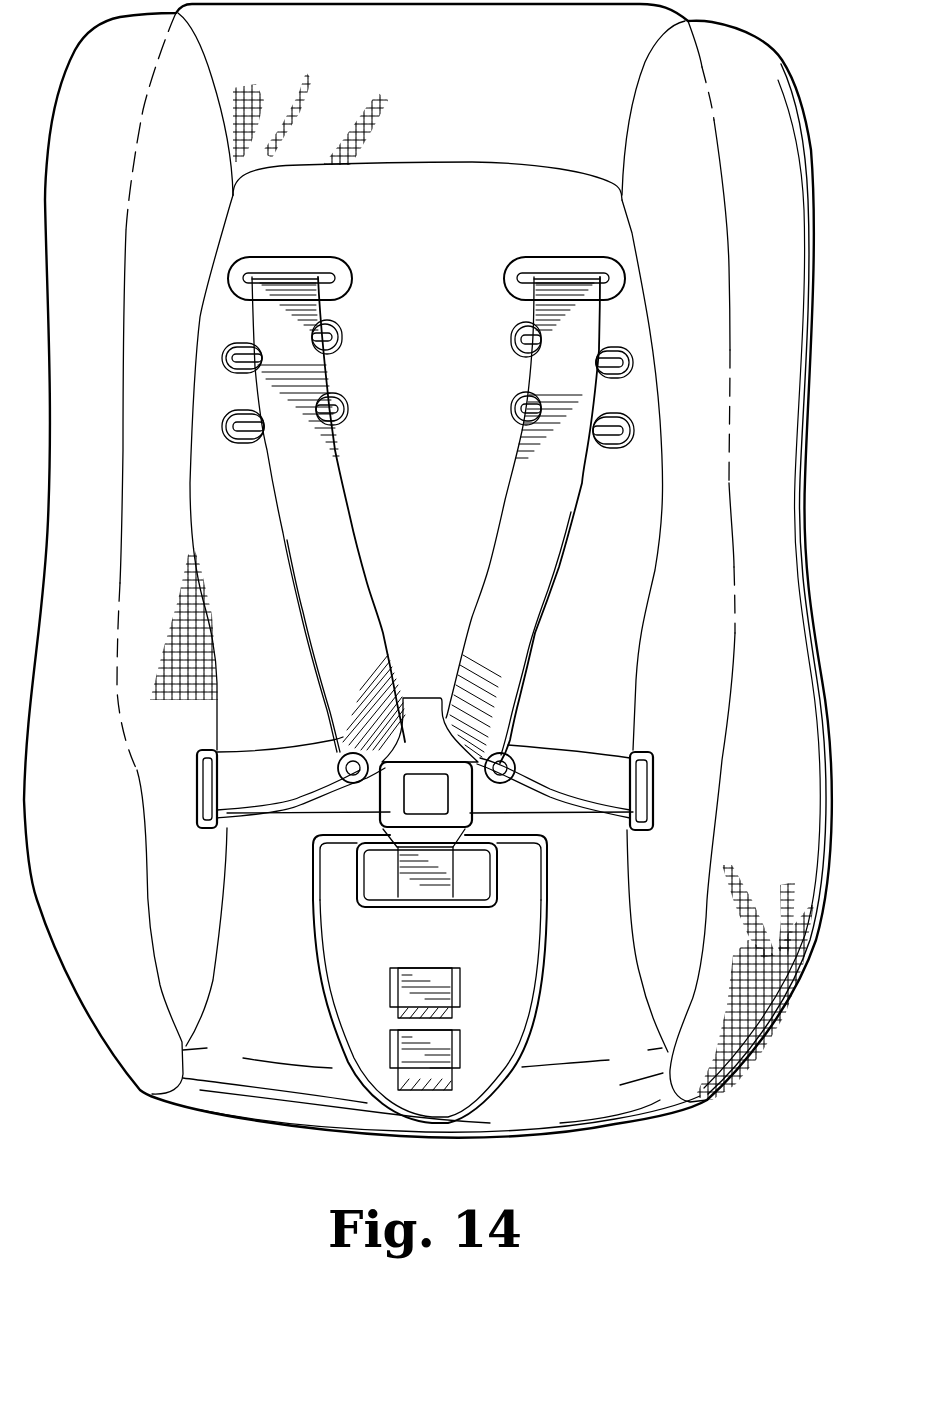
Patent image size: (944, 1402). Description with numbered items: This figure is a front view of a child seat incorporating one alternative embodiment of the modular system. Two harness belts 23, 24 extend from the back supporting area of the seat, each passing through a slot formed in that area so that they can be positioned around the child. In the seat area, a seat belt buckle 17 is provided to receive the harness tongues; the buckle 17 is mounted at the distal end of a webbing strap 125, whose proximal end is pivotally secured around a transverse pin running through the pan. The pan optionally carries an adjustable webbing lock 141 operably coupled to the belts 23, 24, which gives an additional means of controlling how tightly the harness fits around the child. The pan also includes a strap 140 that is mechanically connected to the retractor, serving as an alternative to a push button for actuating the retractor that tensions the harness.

The belt 23 is at (283, 343).
The belt 24 is at (582, 338).
The seat belt buckle 17 is at (397, 813).
The webbing strap 125 is at (415, 850).
The adjustable webbing lock 141 is at (447, 985).
The strap 140 is at (447, 1043).